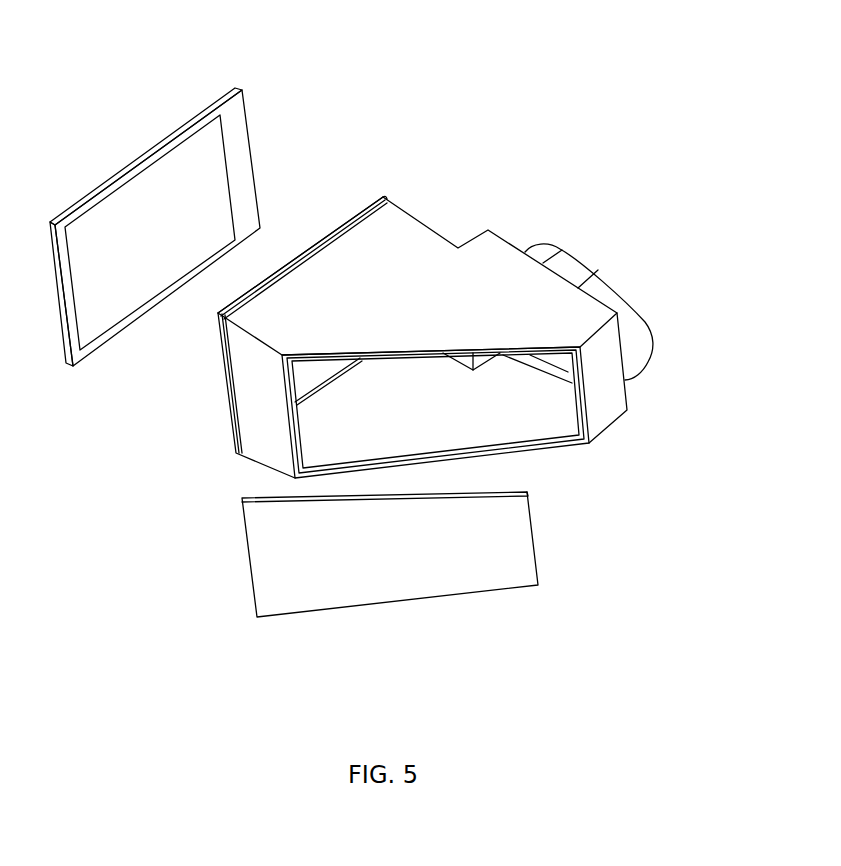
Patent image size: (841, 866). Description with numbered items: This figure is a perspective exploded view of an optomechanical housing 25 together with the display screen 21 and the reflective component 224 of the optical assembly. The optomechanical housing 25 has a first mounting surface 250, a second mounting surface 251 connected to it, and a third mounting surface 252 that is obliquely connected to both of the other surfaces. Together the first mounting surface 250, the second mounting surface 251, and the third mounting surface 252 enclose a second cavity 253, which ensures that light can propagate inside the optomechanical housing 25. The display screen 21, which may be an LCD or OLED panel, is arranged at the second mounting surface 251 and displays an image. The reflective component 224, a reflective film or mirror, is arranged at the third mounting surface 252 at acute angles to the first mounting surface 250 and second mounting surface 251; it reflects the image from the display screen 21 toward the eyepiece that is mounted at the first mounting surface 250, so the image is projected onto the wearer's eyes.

The display screen 21 is at (228, 115).
The optomechanical housing 25 is at (471, 340).
The first mounting surface 250 is at (604, 258).
The second mounting surface 251 is at (358, 195).
The third mounting surface 252 is at (581, 458).
The second cavity 253 is at (473, 402).
The reflective component 224 is at (502, 570).